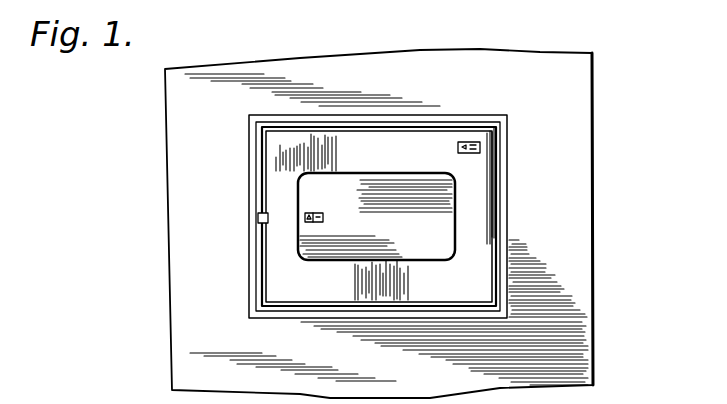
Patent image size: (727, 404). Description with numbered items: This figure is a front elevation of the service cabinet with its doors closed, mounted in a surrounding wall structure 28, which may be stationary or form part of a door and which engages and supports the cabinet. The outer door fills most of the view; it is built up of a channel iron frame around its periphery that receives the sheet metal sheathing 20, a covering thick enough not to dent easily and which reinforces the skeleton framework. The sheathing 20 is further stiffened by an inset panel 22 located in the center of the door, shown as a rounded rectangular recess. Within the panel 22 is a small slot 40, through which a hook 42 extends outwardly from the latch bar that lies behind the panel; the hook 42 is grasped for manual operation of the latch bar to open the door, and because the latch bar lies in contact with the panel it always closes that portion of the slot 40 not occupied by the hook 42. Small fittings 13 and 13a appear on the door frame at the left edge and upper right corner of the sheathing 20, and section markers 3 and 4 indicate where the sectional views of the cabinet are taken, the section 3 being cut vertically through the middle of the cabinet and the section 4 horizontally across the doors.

The clip / fastener on plate edge 13 is at (238, 212).
The fastener tag on plate 13a is at (472, 153).
The sheathing 20 is at (438, 137).
The inset panel 22 is at (453, 256).
The wall structure 28 is at (578, 270).
The slot 40 is at (309, 213).
The hook 42 is at (320, 213).
The section line 3- 3 is at (380, 105).
The section line 4- 4 is at (227, 143).